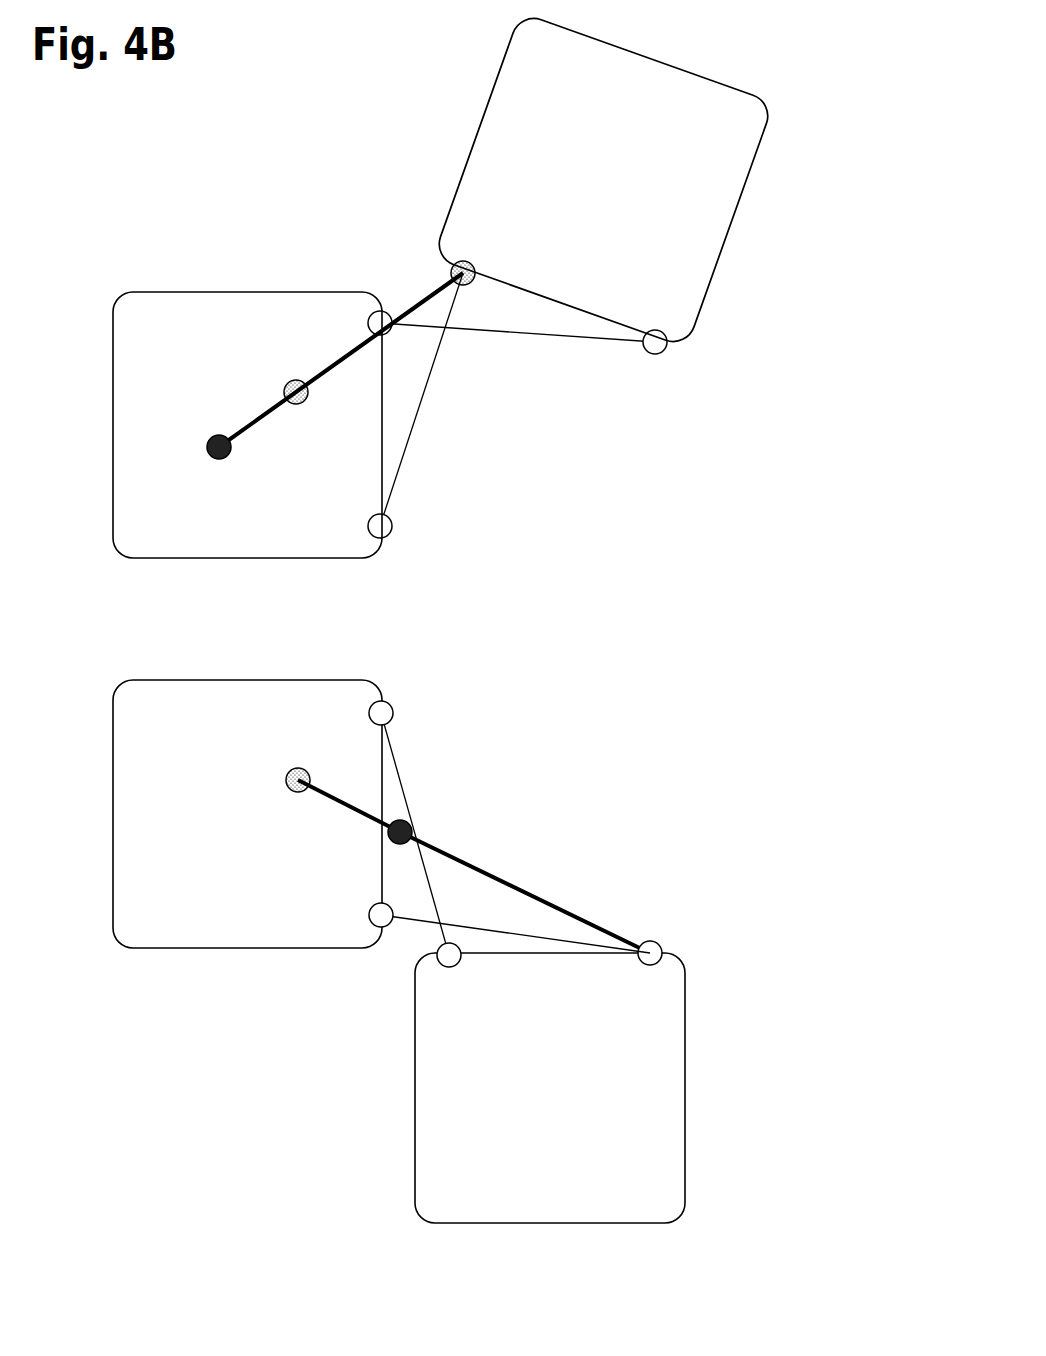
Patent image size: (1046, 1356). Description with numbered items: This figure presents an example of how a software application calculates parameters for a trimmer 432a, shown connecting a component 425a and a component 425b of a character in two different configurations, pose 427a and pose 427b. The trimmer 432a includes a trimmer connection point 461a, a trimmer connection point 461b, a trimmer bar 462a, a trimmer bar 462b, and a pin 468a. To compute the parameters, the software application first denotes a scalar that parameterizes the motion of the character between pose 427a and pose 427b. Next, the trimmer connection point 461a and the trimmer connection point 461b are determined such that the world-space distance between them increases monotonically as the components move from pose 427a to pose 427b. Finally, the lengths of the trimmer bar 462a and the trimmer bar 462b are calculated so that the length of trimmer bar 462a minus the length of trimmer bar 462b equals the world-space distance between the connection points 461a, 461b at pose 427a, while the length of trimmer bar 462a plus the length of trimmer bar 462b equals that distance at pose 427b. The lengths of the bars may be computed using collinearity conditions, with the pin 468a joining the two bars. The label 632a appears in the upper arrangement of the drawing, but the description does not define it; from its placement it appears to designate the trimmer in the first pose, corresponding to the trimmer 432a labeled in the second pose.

The pose 427a is at (842, 74).
The pose 427b is at (856, 615).
The component 425a is at (273, 555).
The component 425b is at (623, 197).
The trimmer connection point 461a is at (311, 406).
The trimmer connection point 461b is at (480, 262).
The trimmer bar 462a is at (254, 410).
The trimmer bar 462b is at (420, 292).
The pin 468a is at (210, 464).
The linkage mechanism 632a is at (338, 224).
The trimmer 432a is at (573, 762).